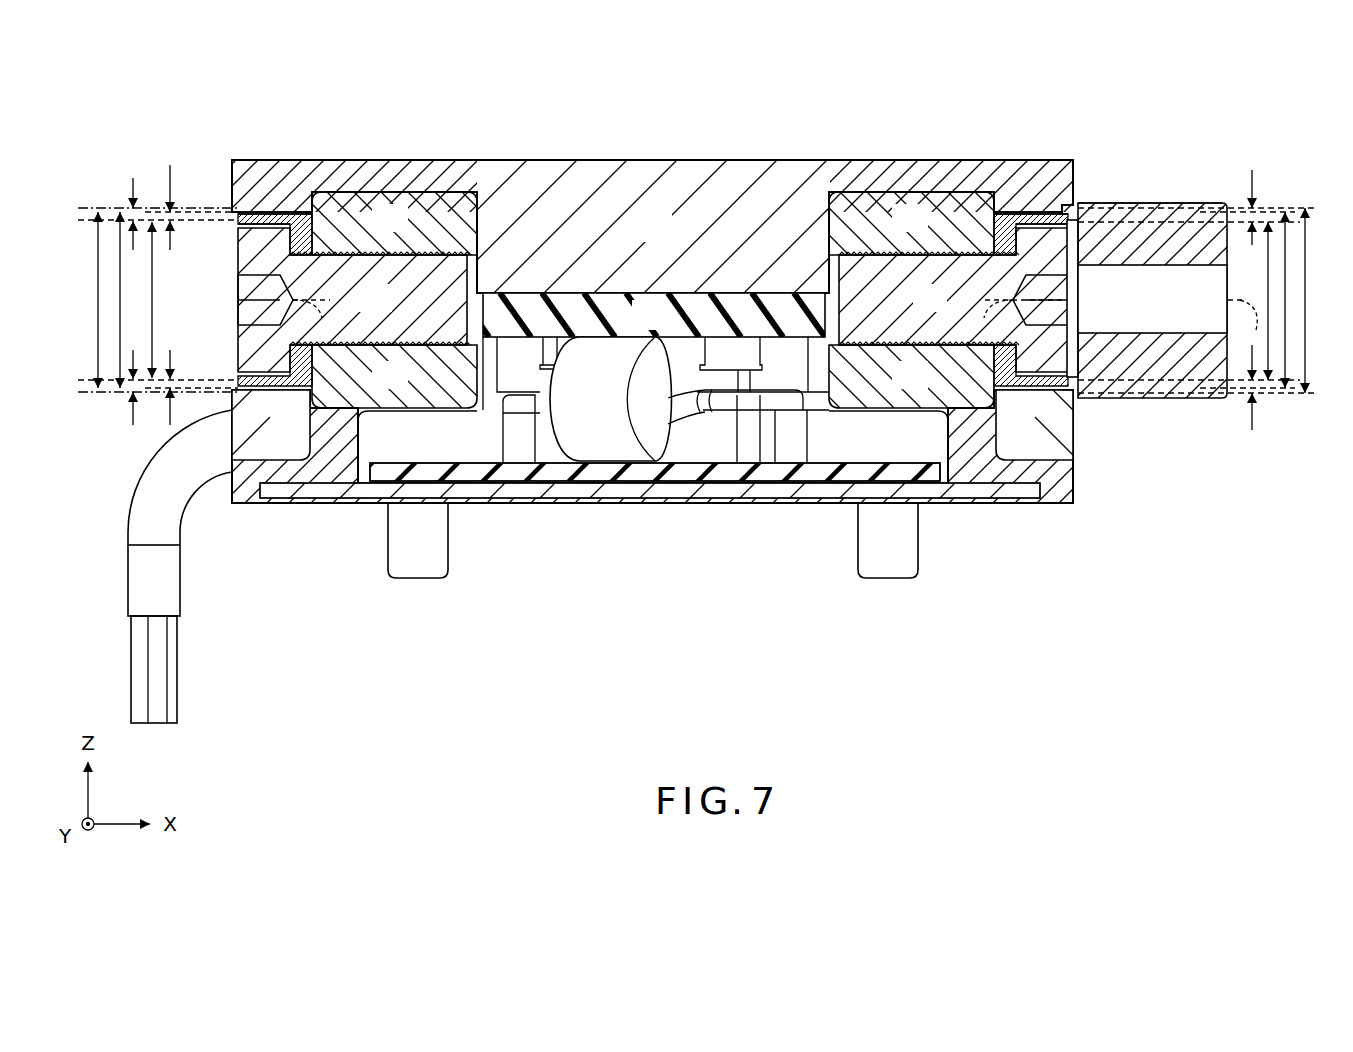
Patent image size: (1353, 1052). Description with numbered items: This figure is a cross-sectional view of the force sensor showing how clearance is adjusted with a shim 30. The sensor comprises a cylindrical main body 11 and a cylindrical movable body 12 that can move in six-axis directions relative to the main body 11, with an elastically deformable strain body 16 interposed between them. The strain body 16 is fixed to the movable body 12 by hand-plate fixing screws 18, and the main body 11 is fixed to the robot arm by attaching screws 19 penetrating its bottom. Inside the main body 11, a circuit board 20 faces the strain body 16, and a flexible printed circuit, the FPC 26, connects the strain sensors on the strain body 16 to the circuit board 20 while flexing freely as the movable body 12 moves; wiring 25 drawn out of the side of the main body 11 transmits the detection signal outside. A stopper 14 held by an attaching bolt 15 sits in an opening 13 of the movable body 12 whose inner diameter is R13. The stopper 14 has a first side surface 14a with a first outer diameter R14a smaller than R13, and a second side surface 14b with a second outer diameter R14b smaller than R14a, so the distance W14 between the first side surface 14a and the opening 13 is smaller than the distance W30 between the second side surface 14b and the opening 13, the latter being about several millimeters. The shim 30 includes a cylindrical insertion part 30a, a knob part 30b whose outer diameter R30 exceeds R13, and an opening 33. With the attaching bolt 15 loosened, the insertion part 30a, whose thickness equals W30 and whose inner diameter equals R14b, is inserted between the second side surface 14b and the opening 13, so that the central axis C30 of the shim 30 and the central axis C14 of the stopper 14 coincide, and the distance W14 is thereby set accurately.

The main body 11 is at (379, 230).
The movable body 12 is at (639, 240).
The opening 13 is at (235, 298).
The stopper 14 is at (239, 222).
The first side surface 14a is at (300, 212).
The second side surface 14b is at (258, 212).
The attaching bolt 15 is at (364, 309).
The strain body 16 is at (639, 326).
The hand-plate fixing screw 18 is at (703, 360).
The attaching screw 19 is at (420, 574).
The circuit board 20 is at (665, 481).
The wiring 25 is at (131, 580).
The FPC 26 is at (579, 407).
The shim 30 is at (1166, 297).
The insertion part 30a is at (1066, 205).
The knob part 30b is at (1197, 222).
The opening 33 is at (1232, 290).
The central axis of the stopper C14 is at (653, 317).
The central axis of the shim C30 is at (1246, 301).
The inner diameter of the opening R13 is at (1290, 435).
The first outer diameter R14a is at (120, 392).
The second outer diameter R14b is at (152, 385).
The outer diameter of the knob part R30 is at (1305, 208).
The distance between first side surface and opening W14 is at (132, 206).
The distance between second side surface and opening W30 is at (170, 210).